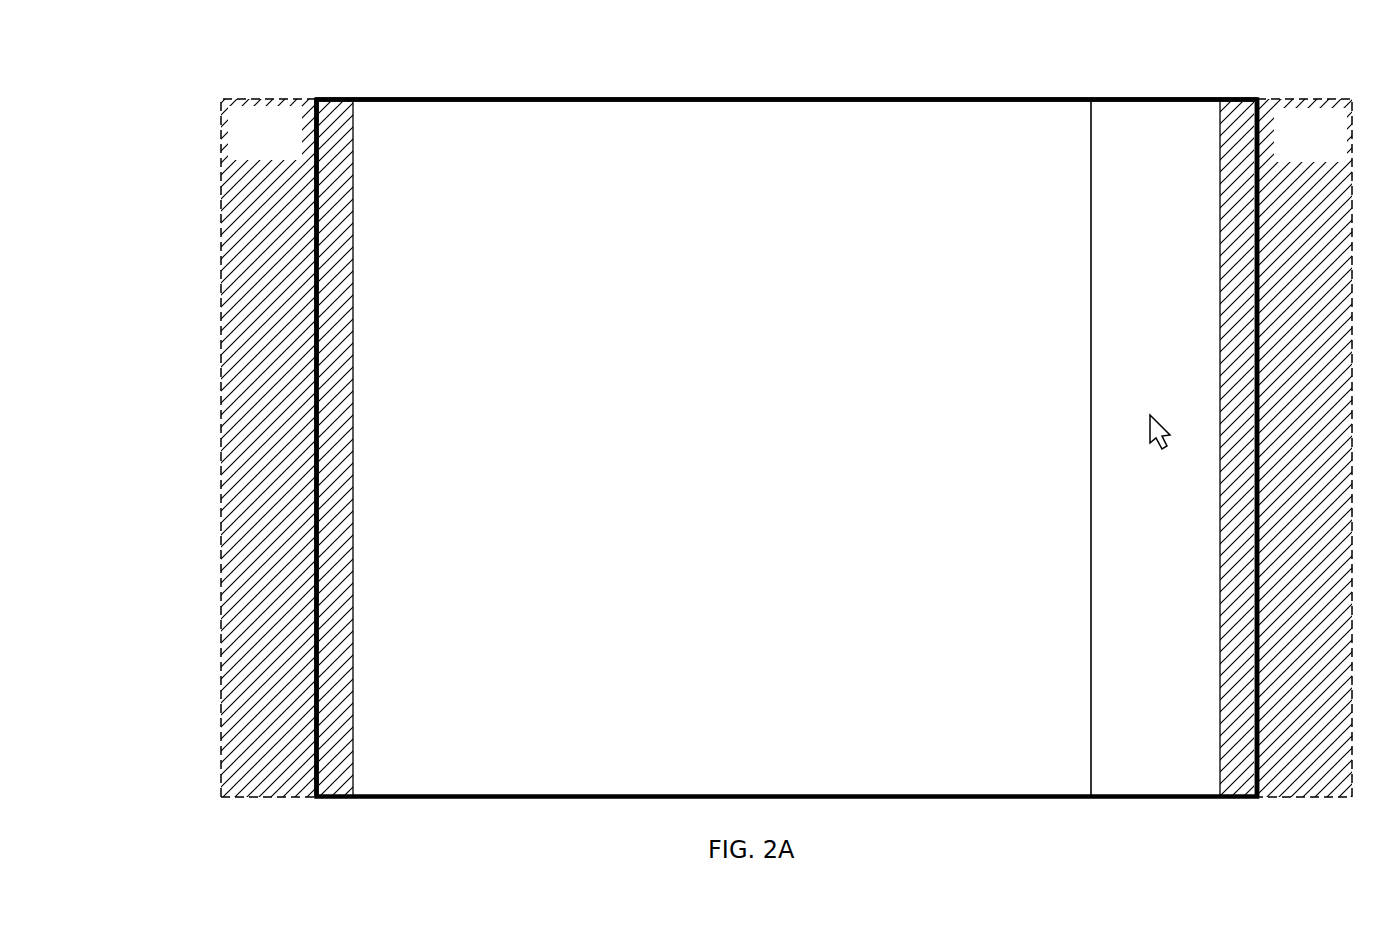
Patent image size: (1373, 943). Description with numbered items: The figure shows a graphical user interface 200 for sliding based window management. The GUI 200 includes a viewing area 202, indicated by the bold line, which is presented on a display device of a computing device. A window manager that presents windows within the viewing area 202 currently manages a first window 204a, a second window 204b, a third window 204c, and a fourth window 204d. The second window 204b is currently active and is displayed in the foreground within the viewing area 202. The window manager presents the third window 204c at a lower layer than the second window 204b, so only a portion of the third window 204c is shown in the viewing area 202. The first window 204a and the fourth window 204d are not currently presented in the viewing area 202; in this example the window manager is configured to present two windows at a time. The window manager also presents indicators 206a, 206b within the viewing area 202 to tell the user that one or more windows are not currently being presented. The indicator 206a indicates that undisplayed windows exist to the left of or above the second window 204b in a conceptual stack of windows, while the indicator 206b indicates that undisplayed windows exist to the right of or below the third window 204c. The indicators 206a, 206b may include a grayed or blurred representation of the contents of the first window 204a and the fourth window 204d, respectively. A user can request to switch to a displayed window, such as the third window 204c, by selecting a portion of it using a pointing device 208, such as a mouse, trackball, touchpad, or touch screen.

The graphical user interface 200 is at (175, 82).
The viewing area 202 is at (1085, 98).
The first window 204a is at (311, 787).
The second window 204b is at (1084, 789).
The third window 204c is at (1214, 789).
The fourth window 204d is at (1346, 789).
The indicator 206a is at (338, 799).
The indicator 206b is at (1247, 799).
The pointing device 208 is at (1152, 411).